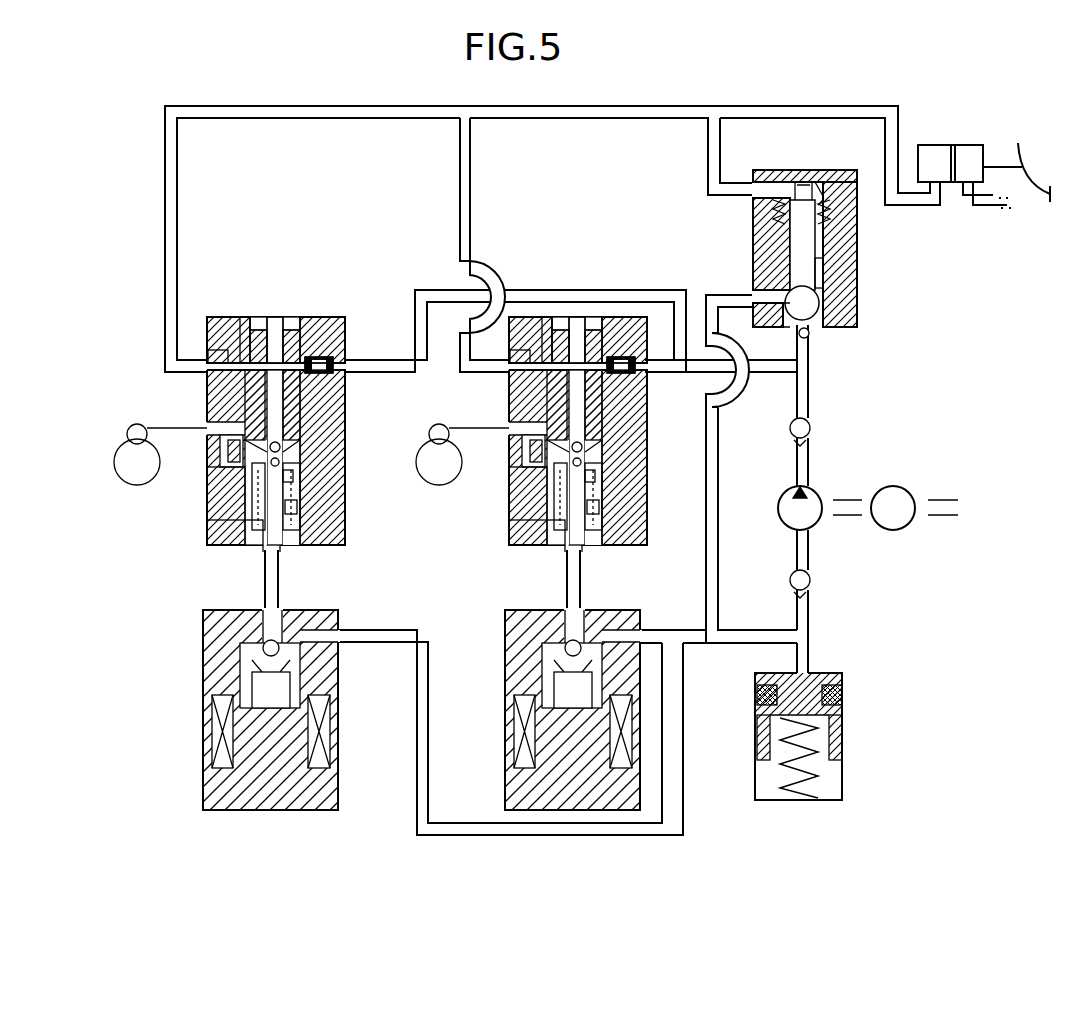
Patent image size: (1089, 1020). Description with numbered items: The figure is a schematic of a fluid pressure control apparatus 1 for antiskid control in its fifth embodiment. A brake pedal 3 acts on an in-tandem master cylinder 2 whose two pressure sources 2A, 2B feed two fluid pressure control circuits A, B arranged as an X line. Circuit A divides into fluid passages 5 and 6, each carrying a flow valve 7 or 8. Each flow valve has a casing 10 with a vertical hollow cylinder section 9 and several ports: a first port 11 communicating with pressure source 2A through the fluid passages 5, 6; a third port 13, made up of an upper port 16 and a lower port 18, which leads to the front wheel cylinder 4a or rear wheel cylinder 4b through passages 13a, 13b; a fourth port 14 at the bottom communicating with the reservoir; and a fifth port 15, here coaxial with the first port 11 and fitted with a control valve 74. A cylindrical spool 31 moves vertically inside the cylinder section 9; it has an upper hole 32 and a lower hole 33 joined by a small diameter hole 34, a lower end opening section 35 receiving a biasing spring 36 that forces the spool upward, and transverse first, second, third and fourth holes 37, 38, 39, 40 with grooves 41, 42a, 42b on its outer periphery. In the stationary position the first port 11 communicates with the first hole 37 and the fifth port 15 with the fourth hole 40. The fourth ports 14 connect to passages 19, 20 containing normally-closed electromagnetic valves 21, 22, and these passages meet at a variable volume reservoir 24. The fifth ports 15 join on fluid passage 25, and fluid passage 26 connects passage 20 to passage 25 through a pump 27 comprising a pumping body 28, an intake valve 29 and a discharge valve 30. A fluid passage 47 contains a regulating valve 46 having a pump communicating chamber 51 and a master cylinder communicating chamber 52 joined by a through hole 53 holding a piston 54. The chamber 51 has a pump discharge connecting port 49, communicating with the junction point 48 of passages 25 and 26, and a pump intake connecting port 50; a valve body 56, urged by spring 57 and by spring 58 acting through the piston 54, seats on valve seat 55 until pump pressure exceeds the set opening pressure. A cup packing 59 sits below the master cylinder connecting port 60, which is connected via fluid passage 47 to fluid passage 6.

The fluid pressure control apparatus 1 is at (935, 382).
The master cylinder 2 is at (964, 142).
The pressure source 2A is at (928, 150).
The pressure source 2B is at (975, 150).
The brake pedal 3 is at (1052, 188).
The wheel cylinder 4a is at (436, 426).
The wheel cylinder 4b is at (134, 426).
The fluid passage 5 is at (473, 178).
The fluid passage 6 is at (178, 182).
The flow valve 7 is at (510, 565).
The flow valve 8 is at (205, 565).
The cylinder section 9 is at (320, 390).
The casing 10 is at (329, 310).
The first port 11 is at (218, 358).
The third port 13 is at (332, 492).
The passage 13a is at (470, 428).
The passage 13b is at (162, 428).
The fourth port 14 is at (270, 548).
The fifth port 15 is at (312, 335).
The upper port 16 is at (232, 452).
The lower port 18 is at (235, 485).
The passage 19 is at (584, 580).
The passage 20 is at (282, 577).
The normally-closed electromagnetic valve 21 is at (505, 712).
The normally-closed electromagnetic valve 22 is at (203, 713).
The variable volume reservoir 24 is at (853, 730).
The fluid passage 25 is at (440, 290).
The fluid passage 26 is at (808, 400).
The pump 27 is at (868, 506).
The pumping body 28 is at (818, 495).
The intake valve 29 is at (810, 578).
The discharge valve 30 is at (812, 428).
The spool 31 is at (286, 340).
The upper hole 32 is at (260, 335).
The lower hole 33 is at (255, 530).
The small diameter hole 34 is at (292, 440).
The lower end opening section 35 is at (292, 480).
The biasing spring 36 is at (295, 510).
The first hole 37 is at (256, 350).
The second hole 38 is at (252, 420).
The third hole 39 is at (232, 525).
The fourth hole 40 is at (296, 323).
The groove 41 is at (230, 345).
The groove 42a is at (280, 447).
The groove 42b is at (290, 462).
The regulating valve 46 is at (822, 290).
The fluid passage 47 is at (708, 158).
The junction point 48 is at (808, 372).
The pump discharge connecting port 49 is at (809, 338).
The pump intake connecting port 50 is at (765, 300).
The pump communicating chamber 51 is at (838, 285).
The master cylinder communicating chamber 52 is at (822, 190).
The through hole 53 is at (815, 235).
The piston 54 is at (790, 238).
The valve seat 55 is at (797, 318).
The valve body 56 is at (785, 313).
The spring 57 is at (823, 270).
The spring 58 is at (796, 176).
The cup packing 59 is at (775, 210).
The master cylinder connecting port 60 is at (760, 178).
The control valve 74 is at (335, 362).
The fluid pressure control circuit A is at (796, 99).
The fluid pressure control circuit B is at (987, 214).